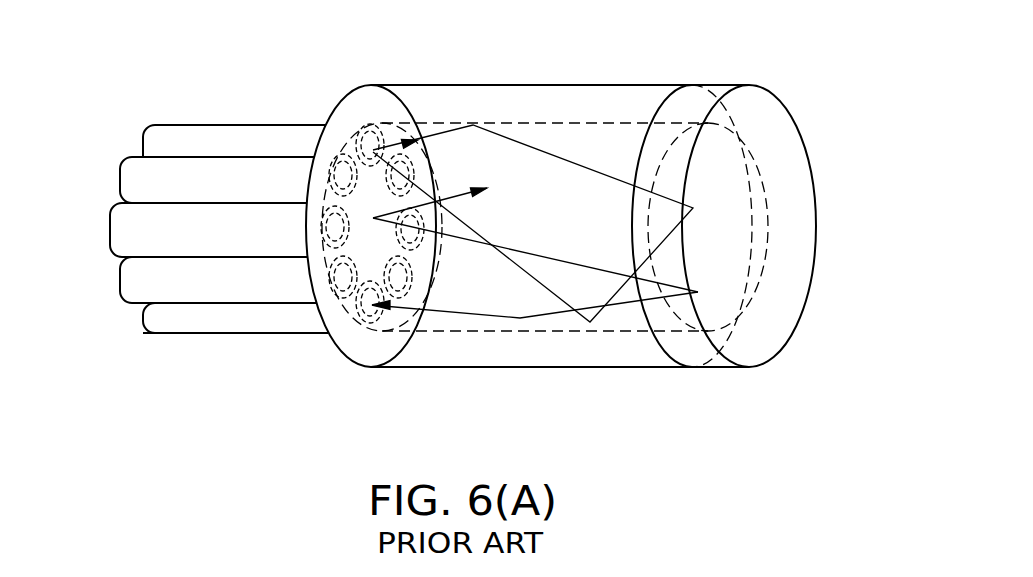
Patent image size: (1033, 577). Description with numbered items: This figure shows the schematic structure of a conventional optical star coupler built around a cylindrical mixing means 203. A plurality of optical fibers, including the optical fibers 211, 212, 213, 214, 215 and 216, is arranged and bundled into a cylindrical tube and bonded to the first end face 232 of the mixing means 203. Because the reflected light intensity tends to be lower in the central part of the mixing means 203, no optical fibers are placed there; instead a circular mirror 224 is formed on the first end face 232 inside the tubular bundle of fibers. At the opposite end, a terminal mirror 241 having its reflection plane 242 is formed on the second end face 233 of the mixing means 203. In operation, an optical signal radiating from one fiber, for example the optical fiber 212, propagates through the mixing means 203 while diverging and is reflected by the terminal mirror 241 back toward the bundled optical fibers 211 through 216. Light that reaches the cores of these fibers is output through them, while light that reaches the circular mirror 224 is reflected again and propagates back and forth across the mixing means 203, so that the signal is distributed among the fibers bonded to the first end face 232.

The mixing means 203 is at (497, 85).
The optical fiber 211 is at (253, 340).
The optical fiber 212 is at (147, 135).
The optical fiber 213 is at (117, 172).
The optical fiber 214 is at (110, 223).
The optical fiber 215 is at (120, 278).
The optical fiber 216 is at (147, 318).
The circular mirror 224 is at (373, 193).
The first end face 232 is at (373, 320).
The second end face 233 is at (660, 110).
The terminal mirror 241 is at (718, 83).
The reflection plane 242 is at (775, 313).